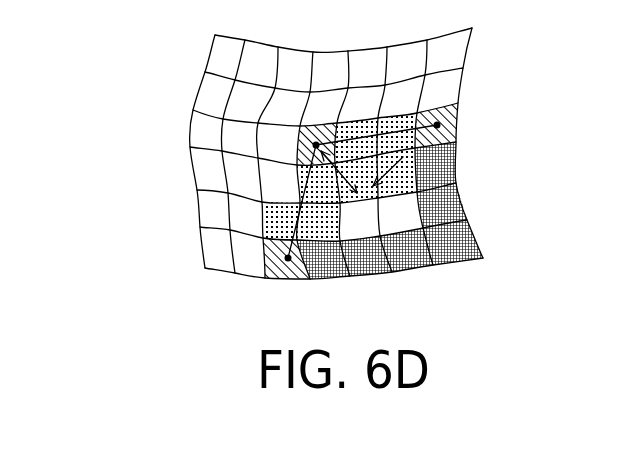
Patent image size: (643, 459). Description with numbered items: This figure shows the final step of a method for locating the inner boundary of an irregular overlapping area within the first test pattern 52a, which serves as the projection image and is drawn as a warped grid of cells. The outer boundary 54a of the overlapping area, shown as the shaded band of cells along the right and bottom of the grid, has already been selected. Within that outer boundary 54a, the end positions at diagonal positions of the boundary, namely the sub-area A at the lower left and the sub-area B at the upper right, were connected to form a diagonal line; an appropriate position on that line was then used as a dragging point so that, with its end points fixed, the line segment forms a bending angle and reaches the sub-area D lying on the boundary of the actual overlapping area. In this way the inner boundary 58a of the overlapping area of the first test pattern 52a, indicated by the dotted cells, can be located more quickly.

The first test pattern 52a is at (466, 54).
The inner boundary 58a is at (345, 123).
The outer boundary 54a is at (460, 260).
The sub-area A is at (283, 274).
The sub-area B is at (454, 122).
The sub-area D is at (298, 152).